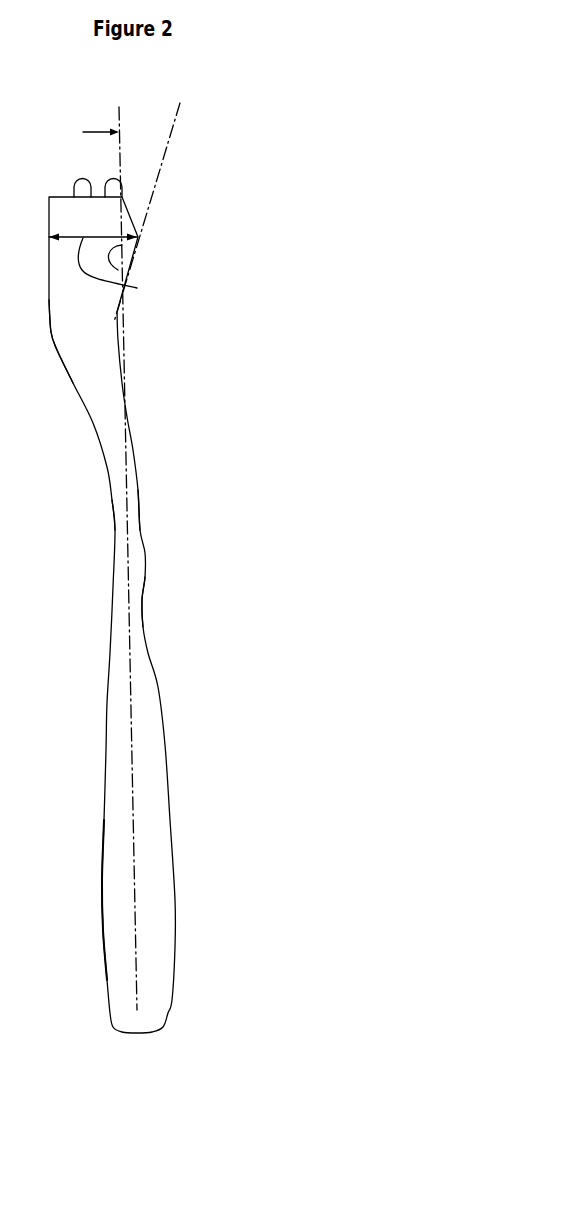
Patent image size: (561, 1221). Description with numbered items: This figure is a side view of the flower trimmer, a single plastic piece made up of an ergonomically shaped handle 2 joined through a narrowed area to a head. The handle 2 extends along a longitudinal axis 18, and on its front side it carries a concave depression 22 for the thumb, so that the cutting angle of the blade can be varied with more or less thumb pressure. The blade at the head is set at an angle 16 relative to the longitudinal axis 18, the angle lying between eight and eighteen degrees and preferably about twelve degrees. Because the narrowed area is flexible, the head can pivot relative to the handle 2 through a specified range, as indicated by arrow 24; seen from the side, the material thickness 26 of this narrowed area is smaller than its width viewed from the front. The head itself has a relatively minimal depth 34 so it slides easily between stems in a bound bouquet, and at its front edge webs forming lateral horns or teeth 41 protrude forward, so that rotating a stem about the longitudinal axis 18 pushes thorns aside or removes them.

The handle 2 is at (155, 940).
The angle 16 is at (178, 136).
The longitudinal axis 18 is at (137, 817).
The concave depression 22 is at (138, 623).
The arrow 24 is at (98, 343).
The material thickness 26 is at (57, 500).
The depth 34 is at (137, 288).
The teeth 41 is at (112, 178).